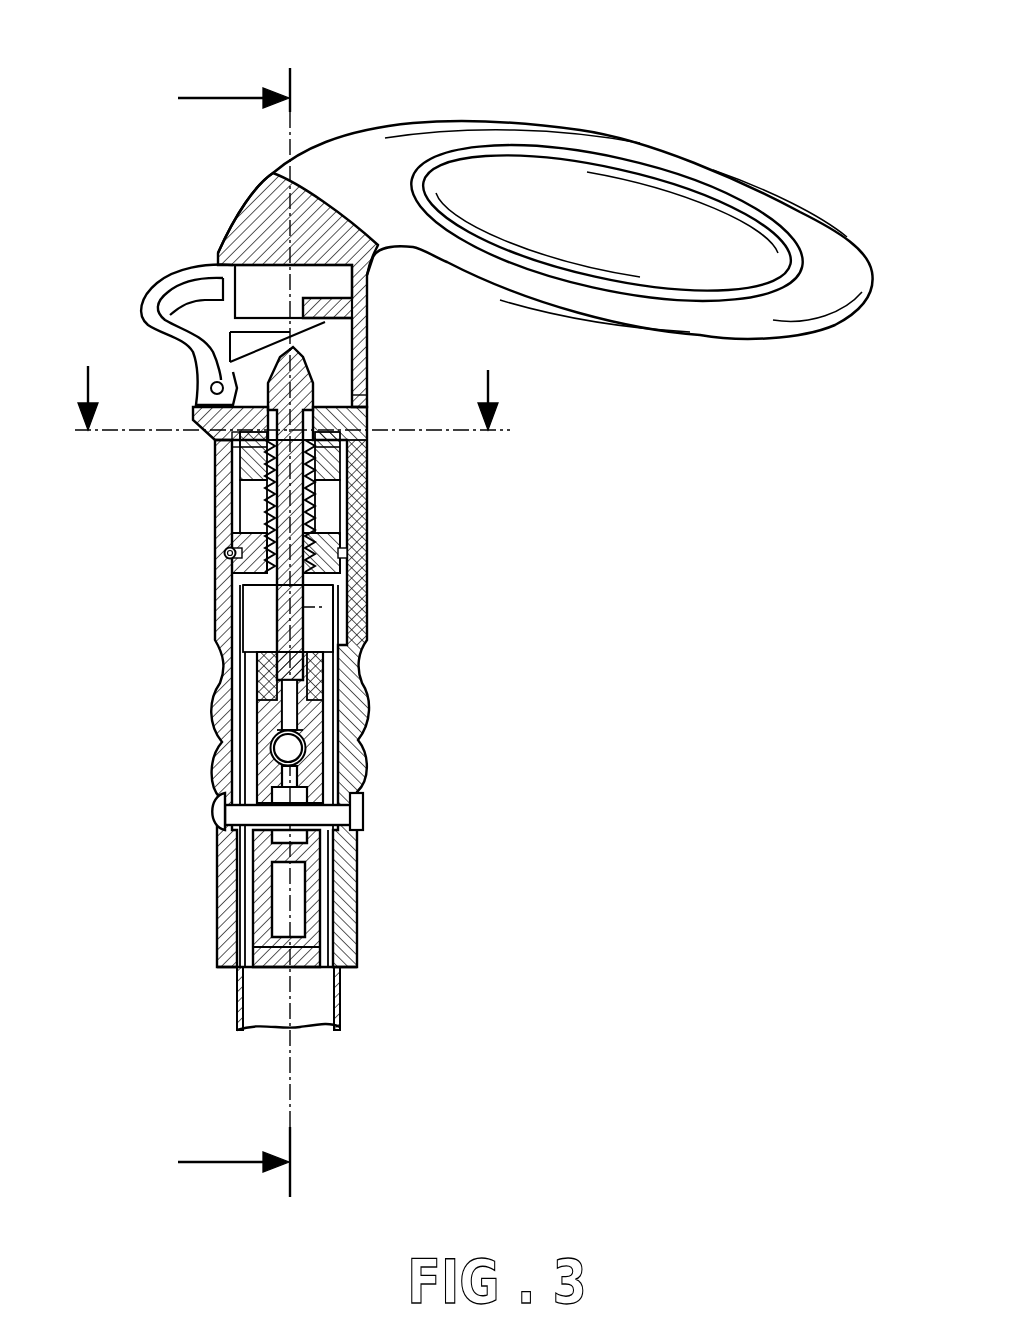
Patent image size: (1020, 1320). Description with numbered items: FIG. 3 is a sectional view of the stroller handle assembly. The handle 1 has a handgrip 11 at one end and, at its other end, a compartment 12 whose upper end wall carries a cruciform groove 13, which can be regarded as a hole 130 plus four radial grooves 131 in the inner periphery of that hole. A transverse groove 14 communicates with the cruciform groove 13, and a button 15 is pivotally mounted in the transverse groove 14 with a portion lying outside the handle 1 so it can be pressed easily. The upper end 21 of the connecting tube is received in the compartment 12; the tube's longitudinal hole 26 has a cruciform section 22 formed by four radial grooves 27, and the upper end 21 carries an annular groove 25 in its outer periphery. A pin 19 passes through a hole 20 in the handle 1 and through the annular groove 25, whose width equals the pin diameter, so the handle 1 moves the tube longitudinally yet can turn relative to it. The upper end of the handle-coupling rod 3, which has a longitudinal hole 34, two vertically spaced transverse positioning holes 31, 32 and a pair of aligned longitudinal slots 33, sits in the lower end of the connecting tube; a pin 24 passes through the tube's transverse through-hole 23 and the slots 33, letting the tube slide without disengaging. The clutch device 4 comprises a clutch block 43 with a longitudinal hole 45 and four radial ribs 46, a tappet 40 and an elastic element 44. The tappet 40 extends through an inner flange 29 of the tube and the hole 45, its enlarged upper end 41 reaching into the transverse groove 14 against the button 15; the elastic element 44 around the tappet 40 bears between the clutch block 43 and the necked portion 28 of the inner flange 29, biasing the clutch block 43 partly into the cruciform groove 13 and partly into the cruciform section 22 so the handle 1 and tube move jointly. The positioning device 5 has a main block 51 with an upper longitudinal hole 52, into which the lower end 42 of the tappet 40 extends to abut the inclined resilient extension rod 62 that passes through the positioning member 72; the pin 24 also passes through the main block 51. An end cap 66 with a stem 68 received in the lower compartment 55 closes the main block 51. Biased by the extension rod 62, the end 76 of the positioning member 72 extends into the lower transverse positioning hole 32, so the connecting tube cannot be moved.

The handle 1 is at (688, 110).
The handle-coupling rod 3 is at (343, 987).
The clutch device 4 is at (221, 632).
The positioning device 5 is at (292, 382).
The handgrip 11 is at (521, 138).
The compartment 12 is at (222, 530).
The cruciform groove 13 is at (362, 445).
The transverse groove 14 is at (257, 277).
The button 15 is at (157, 282).
The pin 19 is at (225, 553).
The hole 20 is at (234, 553).
The upper end 21 is at (342, 507).
The cruciform section 22 is at (342, 532).
The transverse through-hole 23 is at (228, 800).
The pin 24 is at (222, 818).
The annular groove 25 is at (342, 565).
The longitudinal hole 26 is at (250, 500).
The radial grooves 27 is at (245, 492).
The necked portion 28 is at (240, 582).
The inner flange 29 is at (352, 553).
The transverse positioning hole 31 is at (325, 607).
The transverse positioning hole 32 is at (288, 748).
The longitudinal slot 33 is at (248, 747).
The longitudinal hole 34 is at (256, 627).
The tappet 40 is at (266, 487).
The enlarged upper end 41 is at (293, 350).
The lower end 42 is at (258, 652).
The clutch block 43 is at (342, 488).
The elastic element 44 is at (320, 500).
The longitudinal hole 45 is at (195, 407).
The radial ribs 46 is at (232, 444).
The main block 51 is at (312, 728).
The upper longitudinal hole 52 is at (275, 694).
The lower compartment 55 is at (322, 880).
The inclined resilient extension rod 62 is at (324, 697).
The end cap 66 is at (345, 953).
The stem 68 is at (262, 947).
The positioning member 72 is at (282, 727).
The end 76 is at (312, 758).
The hole 130 is at (342, 395).
The radial grooves 131 is at (343, 422).